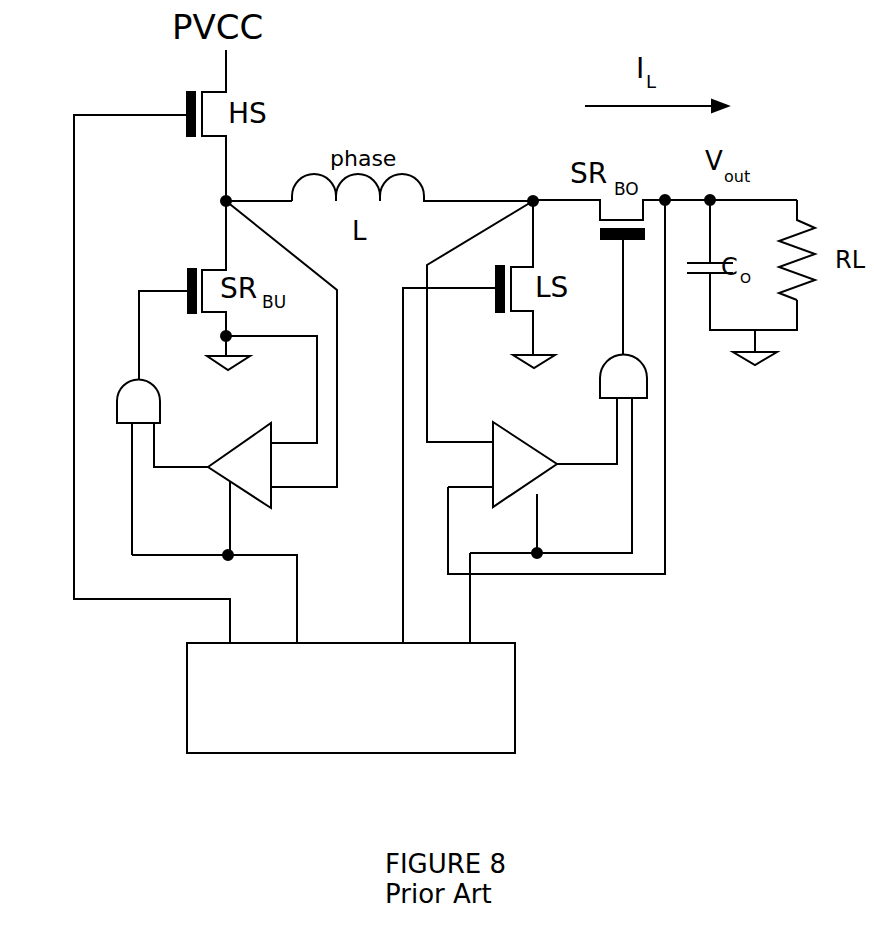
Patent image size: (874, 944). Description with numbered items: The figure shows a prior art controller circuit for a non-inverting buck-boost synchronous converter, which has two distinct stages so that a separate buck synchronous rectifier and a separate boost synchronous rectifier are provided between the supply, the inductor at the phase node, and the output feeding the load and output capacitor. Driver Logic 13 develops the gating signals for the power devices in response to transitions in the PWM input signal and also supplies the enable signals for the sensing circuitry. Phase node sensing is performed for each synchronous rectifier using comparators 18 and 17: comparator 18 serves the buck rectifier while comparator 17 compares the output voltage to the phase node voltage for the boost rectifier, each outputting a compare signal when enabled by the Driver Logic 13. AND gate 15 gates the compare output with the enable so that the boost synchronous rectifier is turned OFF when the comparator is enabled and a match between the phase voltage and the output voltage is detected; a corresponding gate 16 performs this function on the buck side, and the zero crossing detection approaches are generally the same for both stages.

The Driver Logic 13 is at (494, 736).
The AND gate 15 is at (610, 375).
The AND gate 16 is at (142, 403).
The comparator 17 is at (518, 460).
The comparator 18 is at (236, 463).